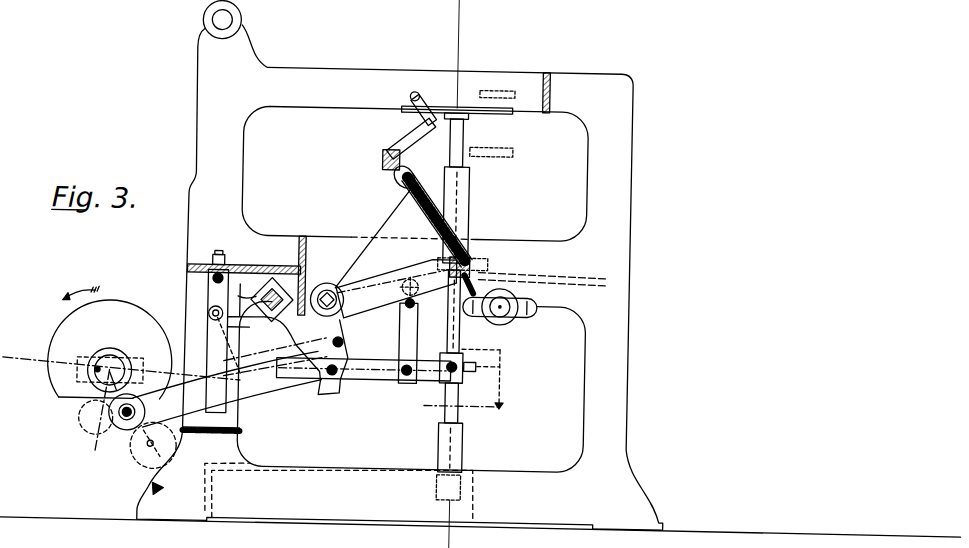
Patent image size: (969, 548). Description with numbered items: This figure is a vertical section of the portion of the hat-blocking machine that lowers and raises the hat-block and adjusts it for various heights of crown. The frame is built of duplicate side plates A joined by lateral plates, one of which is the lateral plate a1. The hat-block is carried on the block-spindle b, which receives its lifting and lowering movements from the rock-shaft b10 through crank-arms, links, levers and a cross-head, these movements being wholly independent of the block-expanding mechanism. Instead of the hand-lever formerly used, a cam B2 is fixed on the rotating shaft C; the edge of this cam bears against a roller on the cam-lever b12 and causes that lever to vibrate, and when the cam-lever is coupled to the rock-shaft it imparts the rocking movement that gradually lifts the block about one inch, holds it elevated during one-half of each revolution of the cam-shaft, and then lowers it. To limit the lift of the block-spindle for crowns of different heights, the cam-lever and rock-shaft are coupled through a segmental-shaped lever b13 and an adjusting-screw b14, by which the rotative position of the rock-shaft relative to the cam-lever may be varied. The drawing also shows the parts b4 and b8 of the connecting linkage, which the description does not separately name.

The side plate A is at (607, 264).
The lateral plate a1 is at (283, 272).
The block-spindle b is at (466, 168).
The slide block b4 is at (262, 299).
The connecting bar b8 is at (381, 361).
The rock-shaft b10 is at (324, 287).
The cam-lever b12 is at (388, 302).
The segmental-shaped lever b13 is at (431, 228).
The adjusting-screw b14 is at (411, 199).
The cam B2 is at (92, 354).
The rotating shaft C is at (110, 380).